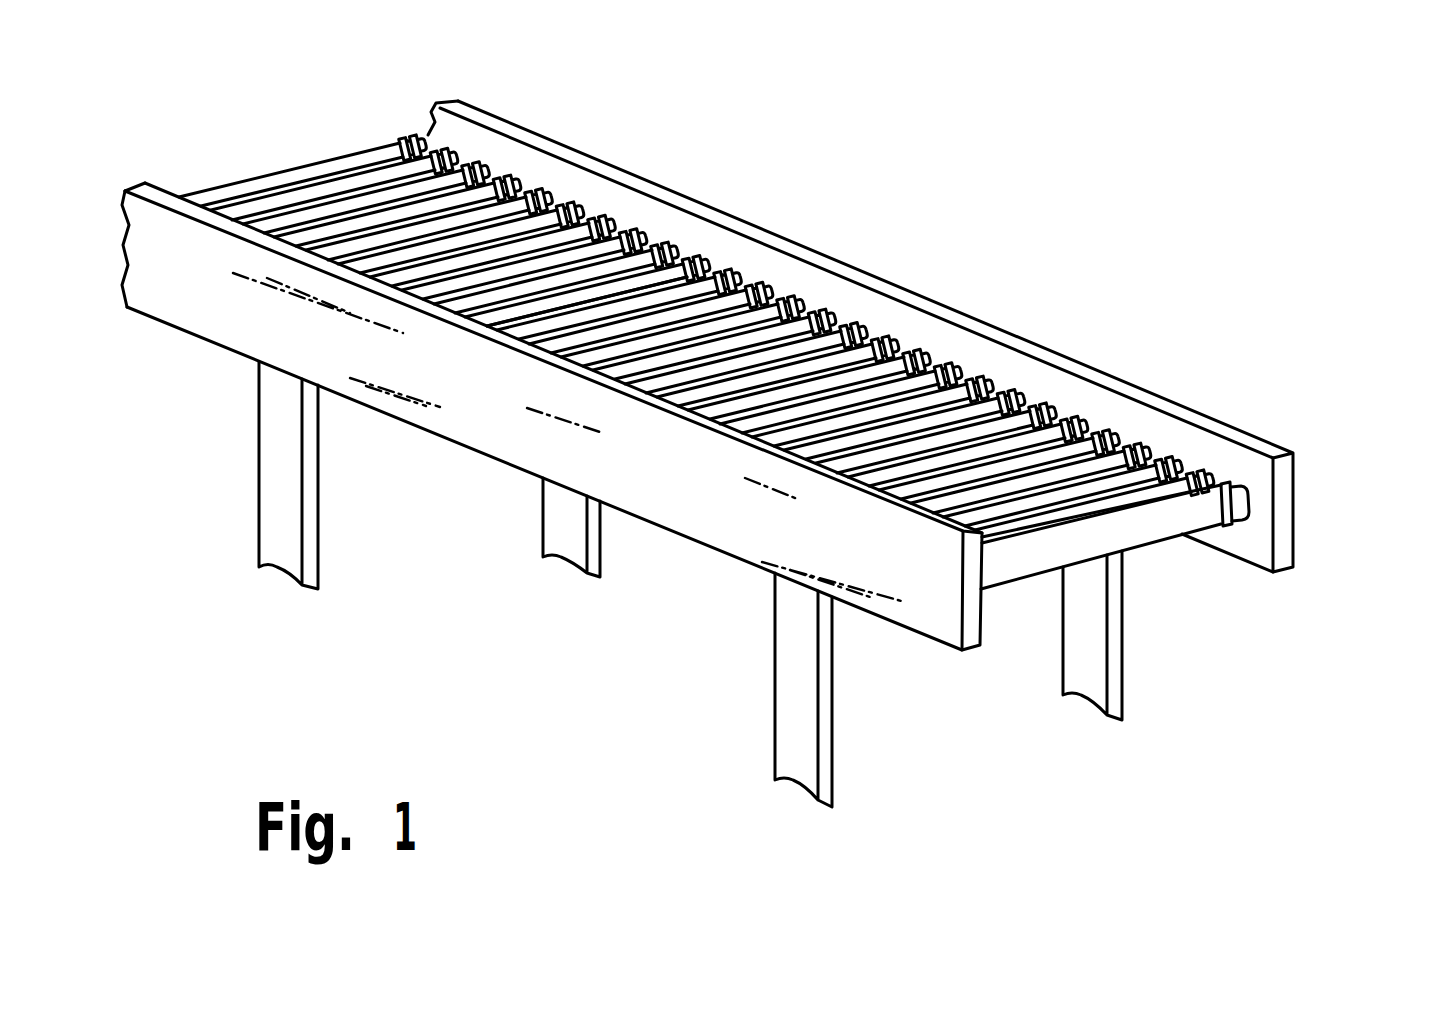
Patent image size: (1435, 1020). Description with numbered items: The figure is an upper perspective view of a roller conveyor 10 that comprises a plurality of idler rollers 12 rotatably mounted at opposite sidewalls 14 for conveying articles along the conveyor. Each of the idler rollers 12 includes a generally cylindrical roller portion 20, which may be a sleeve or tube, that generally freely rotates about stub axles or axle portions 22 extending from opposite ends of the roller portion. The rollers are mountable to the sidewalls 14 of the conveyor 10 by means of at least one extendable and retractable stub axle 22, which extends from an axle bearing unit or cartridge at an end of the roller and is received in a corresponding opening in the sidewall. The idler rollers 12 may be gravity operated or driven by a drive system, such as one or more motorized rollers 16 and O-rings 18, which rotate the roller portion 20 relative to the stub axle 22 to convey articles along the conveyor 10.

The roller conveyor 10 is at (910, 198).
The idler rollers 12 is at (540, 218).
The sidewalls 14 is at (998, 335).
The motorized rollers 16 is at (1170, 525).
The O-rings 18 is at (1243, 493).
The roller portions 20 is at (668, 268).
The stub axle 22 is at (1250, 516).